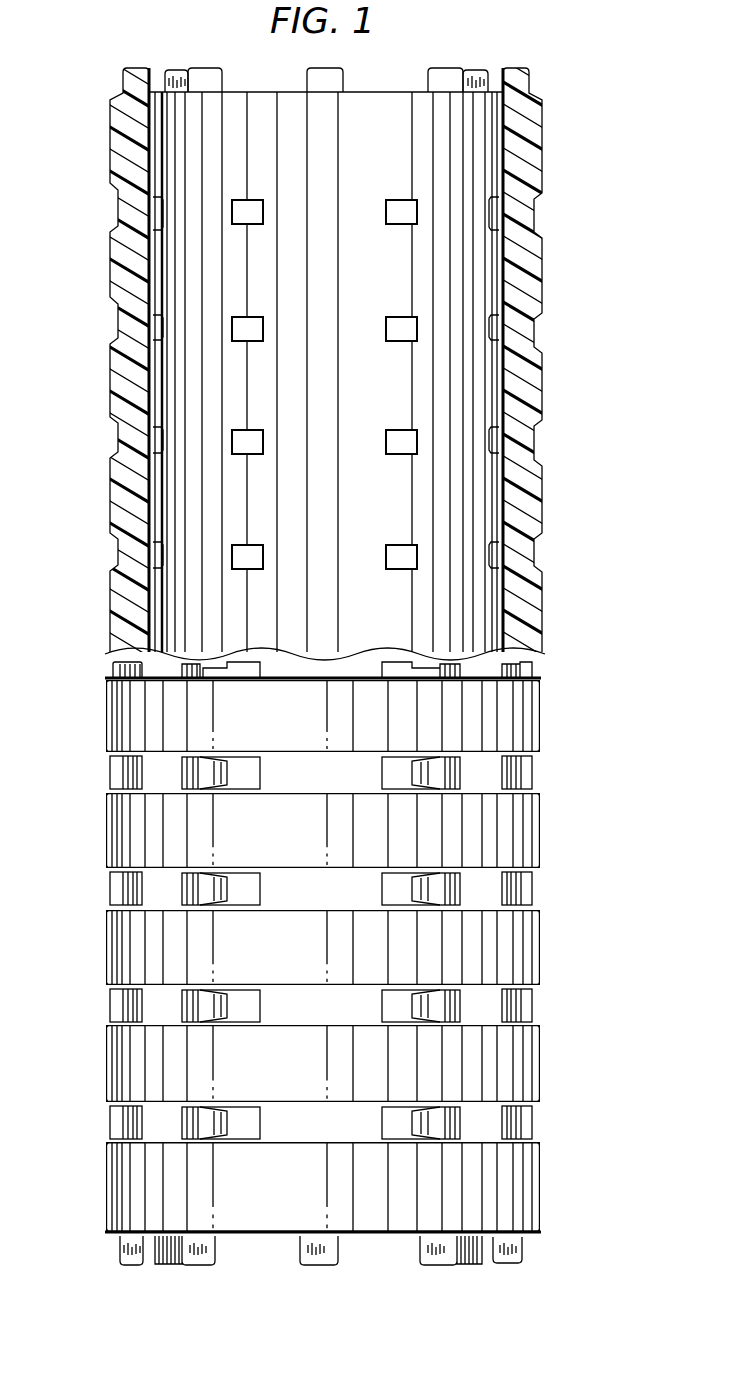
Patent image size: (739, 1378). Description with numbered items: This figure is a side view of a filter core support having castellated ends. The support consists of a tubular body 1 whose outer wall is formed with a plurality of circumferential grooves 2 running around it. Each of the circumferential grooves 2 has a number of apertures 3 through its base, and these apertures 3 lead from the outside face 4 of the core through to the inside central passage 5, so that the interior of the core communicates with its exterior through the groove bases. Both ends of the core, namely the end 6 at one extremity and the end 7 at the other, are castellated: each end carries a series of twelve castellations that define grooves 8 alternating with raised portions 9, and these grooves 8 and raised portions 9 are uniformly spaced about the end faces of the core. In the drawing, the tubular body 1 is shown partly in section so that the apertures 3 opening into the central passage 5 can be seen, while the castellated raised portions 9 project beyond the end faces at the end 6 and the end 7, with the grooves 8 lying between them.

The tubular body 1 is at (542, 388).
The circumferential grooves 2 is at (536, 222).
The apertures 3 is at (400, 220).
The outside face 4 is at (552, 496).
The inside central passage 5 is at (380, 410).
The end 6 is at (497, 30).
The end 7 is at (254, 1255).
The grooves 8 is at (367, 93).
The raised portions 9 is at (203, 48).